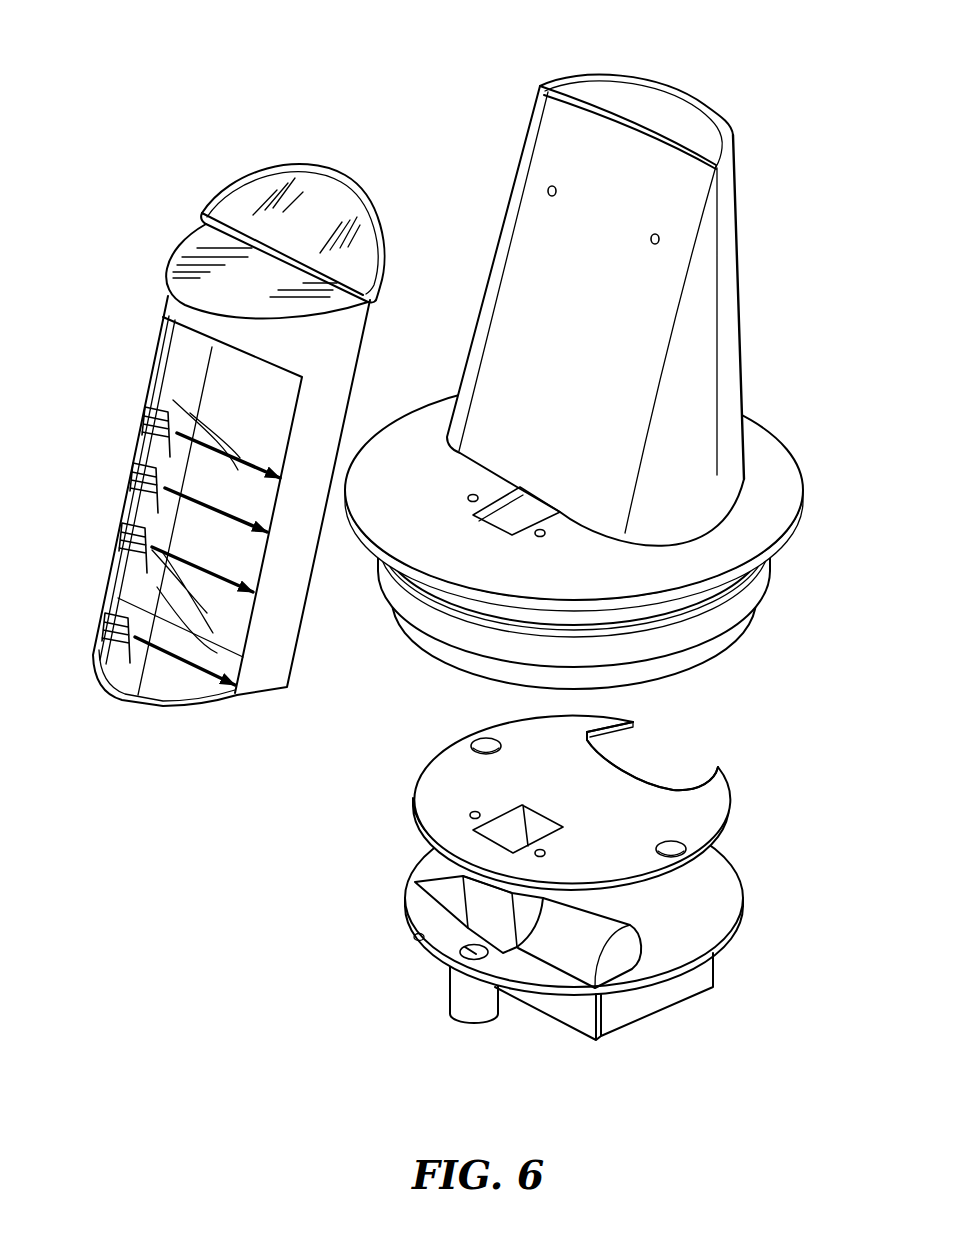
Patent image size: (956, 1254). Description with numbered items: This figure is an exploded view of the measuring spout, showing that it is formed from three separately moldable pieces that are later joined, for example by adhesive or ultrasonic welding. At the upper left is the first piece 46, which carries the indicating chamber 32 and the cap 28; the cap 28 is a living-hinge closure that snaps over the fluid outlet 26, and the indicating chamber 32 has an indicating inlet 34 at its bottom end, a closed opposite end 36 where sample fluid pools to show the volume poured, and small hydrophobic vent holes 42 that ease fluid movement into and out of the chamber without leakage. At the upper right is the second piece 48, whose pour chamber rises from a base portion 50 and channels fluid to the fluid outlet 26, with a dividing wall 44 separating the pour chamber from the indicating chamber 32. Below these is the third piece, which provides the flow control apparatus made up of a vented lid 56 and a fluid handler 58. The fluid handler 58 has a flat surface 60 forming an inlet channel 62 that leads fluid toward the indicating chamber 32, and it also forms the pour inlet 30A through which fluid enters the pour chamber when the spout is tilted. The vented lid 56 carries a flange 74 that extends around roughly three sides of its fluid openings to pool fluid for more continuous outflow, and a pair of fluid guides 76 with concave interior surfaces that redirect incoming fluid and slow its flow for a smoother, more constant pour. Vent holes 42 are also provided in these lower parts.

The fluid outlet 26 is at (650, 110).
The cap 28 is at (252, 192).
The pour inlet 30A is at (650, 739).
The indicating chamber 32 is at (223, 393).
The indicating inlet 34 is at (528, 502).
The closed opposite end 36 is at (207, 245).
The vent holes 42 is at (648, 241).
The dividing wall 44 is at (576, 337).
The first piece 46 is at (101, 324).
The second piece 48 is at (766, 236).
The base portion 50 is at (767, 468).
The vented lid 56 is at (710, 877).
The fluid handler 58 is at (400, 770).
The flat surface 60 is at (584, 784).
The inlet channel 62 is at (482, 930).
The flange 74 is at (700, 988).
The fluid guides 76 is at (621, 958).